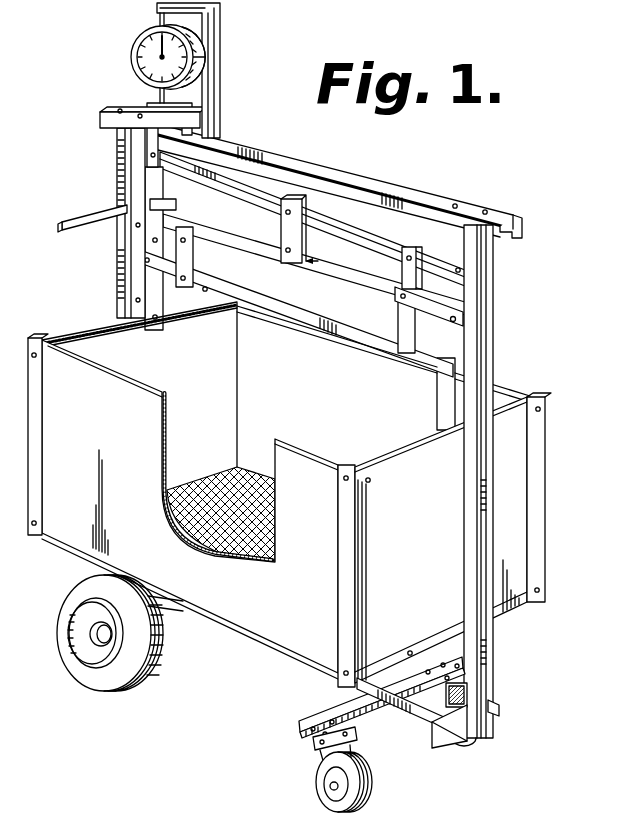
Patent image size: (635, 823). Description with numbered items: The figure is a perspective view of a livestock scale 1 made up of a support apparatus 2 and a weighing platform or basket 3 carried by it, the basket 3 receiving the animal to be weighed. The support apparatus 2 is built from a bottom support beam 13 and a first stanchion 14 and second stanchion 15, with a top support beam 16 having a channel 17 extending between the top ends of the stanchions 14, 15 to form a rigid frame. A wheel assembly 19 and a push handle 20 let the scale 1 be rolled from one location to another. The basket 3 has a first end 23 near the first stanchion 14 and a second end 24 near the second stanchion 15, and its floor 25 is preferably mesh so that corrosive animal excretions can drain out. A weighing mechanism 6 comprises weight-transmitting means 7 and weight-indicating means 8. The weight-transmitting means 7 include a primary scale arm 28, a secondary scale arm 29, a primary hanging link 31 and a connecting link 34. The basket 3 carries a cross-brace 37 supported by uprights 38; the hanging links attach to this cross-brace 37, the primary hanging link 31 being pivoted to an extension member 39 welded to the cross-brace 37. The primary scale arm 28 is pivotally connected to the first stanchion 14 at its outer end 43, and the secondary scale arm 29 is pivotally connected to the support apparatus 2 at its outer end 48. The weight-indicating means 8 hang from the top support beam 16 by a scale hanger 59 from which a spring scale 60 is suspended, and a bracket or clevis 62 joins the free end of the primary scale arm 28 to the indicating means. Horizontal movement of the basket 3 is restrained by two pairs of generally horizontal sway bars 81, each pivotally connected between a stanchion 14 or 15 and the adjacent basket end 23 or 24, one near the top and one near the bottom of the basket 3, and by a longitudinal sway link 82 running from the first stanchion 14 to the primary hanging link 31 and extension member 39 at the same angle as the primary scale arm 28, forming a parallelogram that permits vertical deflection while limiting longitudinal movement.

The livestock scale 1 is at (496, 170).
The support apparatus 2 is at (307, 493).
The weighing platform or basket 3 is at (545, 520).
The weighing mechanism 6 is at (74, 110).
The weight-transmitting means 7 is at (320, 260).
The weight-indicating means 8 is at (147, 58).
The bottom support beam 13 is at (430, 716).
The first stanchion 14 is at (485, 695).
The second stanchion 15 is at (118, 278).
The top support beam 16 is at (324, 167).
The channel 17 is at (514, 231).
The wheel assembly 19 is at (59, 645).
The push handle 20 is at (78, 222).
The first end 23 is at (545, 433).
The second end 24 is at (58, 343).
The floor 25 is at (264, 541).
The primary scale arm 28 is at (368, 238).
The secondary scale arm 29 is at (260, 250).
The primary hanging link 31 is at (400, 287).
The connecting link 34 is at (281, 224).
The cross-brace 37 is at (303, 322).
The uprights 38 is at (150, 322).
The extension member 39 is at (404, 319).
The outer end 43 is at (445, 273).
The outer end 48 is at (153, 223).
The scale hanger 59 is at (220, 108).
The spring scale 60 is at (146, 75).
The bracket or clevis 62 is at (147, 143).
The sway bars 81 is at (199, 290).
The longitudinal sway link 82 is at (452, 316).